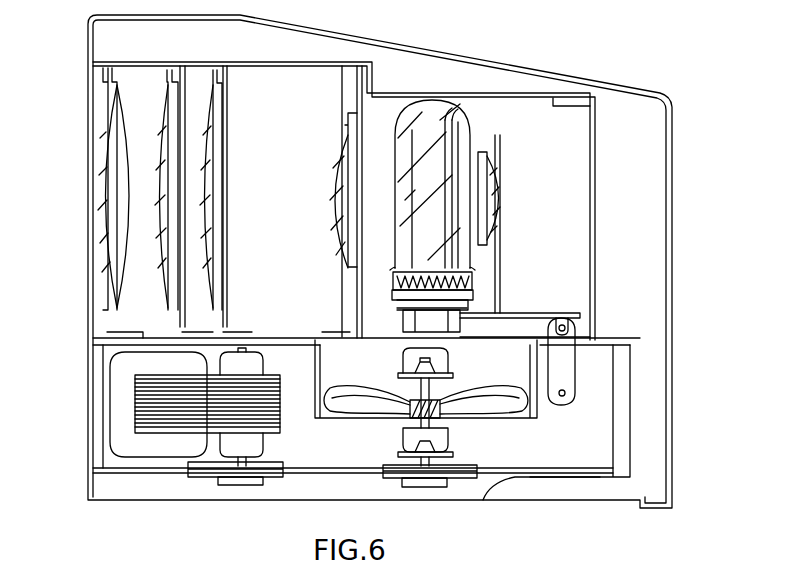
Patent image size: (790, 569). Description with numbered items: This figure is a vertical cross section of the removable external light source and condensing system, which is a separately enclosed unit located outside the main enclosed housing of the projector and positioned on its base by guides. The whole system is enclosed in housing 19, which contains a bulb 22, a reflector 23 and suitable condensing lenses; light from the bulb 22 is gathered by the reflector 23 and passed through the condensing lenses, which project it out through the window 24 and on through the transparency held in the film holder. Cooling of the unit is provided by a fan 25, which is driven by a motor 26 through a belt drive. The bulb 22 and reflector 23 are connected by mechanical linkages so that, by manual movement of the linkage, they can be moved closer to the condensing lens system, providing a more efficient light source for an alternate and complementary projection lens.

The housing 19 is at (677, 188).
The bulb 22 is at (436, 115).
The reflector 23 is at (492, 162).
The window 24 is at (93, 156).
The fan 25 is at (503, 402).
The motor 26 is at (125, 383).